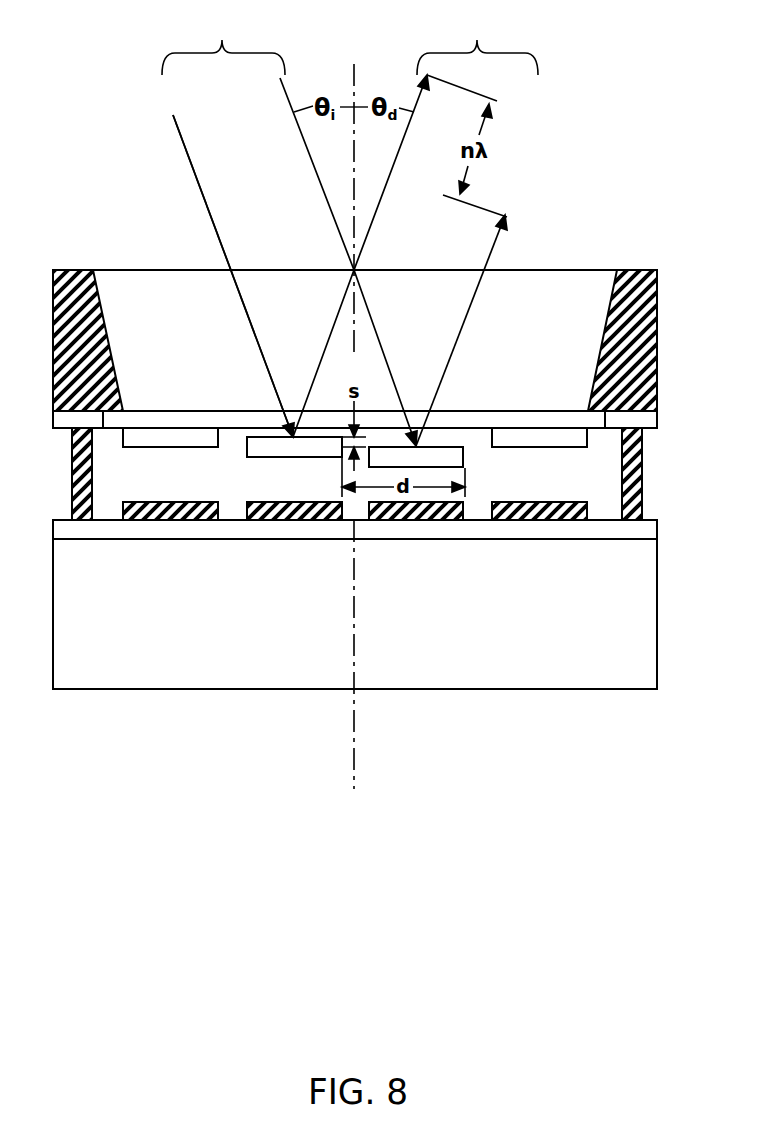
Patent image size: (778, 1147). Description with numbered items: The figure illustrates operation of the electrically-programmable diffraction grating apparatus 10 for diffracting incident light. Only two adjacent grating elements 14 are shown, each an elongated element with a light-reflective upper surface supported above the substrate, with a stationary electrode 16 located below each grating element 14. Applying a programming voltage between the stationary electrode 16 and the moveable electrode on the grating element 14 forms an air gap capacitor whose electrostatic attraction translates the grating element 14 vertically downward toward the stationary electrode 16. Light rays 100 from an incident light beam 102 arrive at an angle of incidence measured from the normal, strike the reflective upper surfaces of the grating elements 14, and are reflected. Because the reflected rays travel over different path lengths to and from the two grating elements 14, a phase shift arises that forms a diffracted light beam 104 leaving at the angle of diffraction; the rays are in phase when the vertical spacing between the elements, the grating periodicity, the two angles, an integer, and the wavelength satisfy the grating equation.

The apparatus 10 is at (630, 752).
The grating element 14 is at (250, 455).
The stationary electrode 16 is at (297, 502).
The light rays 100 is at (317, 183).
The incident light beam 102 is at (225, 220).
The diffracted light beam 104 is at (415, 230).